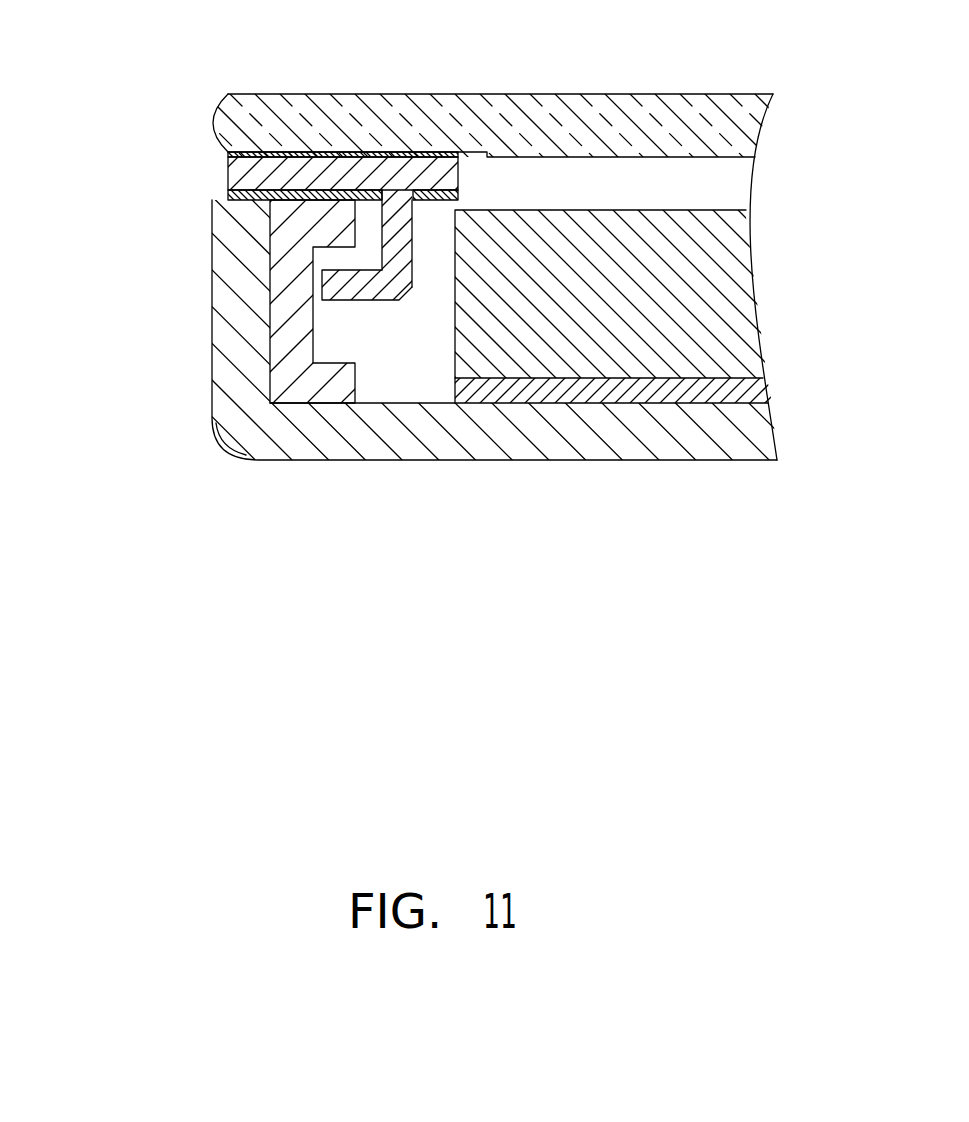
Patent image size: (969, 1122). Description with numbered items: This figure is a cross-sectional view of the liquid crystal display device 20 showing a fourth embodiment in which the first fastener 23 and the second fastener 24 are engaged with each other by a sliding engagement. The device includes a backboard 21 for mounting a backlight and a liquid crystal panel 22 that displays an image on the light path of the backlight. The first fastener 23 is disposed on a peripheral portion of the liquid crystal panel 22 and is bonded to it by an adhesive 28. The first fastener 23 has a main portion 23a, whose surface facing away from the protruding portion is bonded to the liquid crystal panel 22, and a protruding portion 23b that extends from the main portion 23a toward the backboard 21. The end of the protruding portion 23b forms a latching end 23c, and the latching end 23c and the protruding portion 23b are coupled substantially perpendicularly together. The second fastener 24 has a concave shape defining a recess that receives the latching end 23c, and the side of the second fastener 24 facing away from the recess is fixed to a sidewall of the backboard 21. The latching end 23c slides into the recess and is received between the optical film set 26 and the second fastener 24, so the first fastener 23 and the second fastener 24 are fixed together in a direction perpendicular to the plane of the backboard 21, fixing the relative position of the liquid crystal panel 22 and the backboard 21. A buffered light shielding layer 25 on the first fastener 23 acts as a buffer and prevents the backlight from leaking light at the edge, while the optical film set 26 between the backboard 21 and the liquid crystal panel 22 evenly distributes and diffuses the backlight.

The liquid crystal display device 20 is at (536, 48).
The backboard 21 is at (243, 385).
The liquid crystal panel 22 is at (655, 113).
The first fastener 23 is at (121, 152).
The main portion 23a is at (265, 175).
The protruding portion 23b is at (380, 237).
The latching end 23c is at (355, 285).
The second fastener 24 is at (292, 296).
The buffered light shielding layer 25 is at (350, 198).
The optical film set 26 is at (722, 307).
The adhesive 28 is at (240, 123).